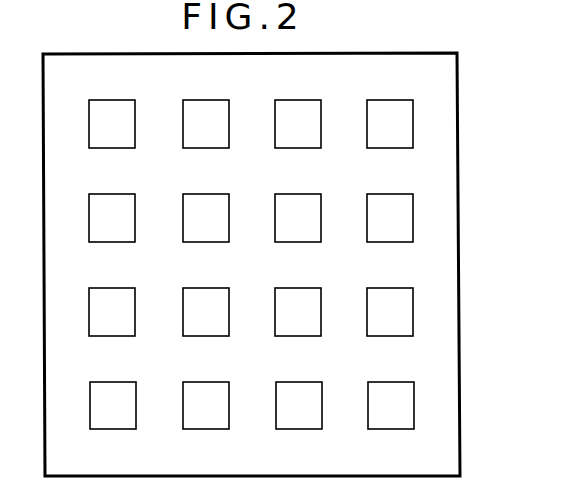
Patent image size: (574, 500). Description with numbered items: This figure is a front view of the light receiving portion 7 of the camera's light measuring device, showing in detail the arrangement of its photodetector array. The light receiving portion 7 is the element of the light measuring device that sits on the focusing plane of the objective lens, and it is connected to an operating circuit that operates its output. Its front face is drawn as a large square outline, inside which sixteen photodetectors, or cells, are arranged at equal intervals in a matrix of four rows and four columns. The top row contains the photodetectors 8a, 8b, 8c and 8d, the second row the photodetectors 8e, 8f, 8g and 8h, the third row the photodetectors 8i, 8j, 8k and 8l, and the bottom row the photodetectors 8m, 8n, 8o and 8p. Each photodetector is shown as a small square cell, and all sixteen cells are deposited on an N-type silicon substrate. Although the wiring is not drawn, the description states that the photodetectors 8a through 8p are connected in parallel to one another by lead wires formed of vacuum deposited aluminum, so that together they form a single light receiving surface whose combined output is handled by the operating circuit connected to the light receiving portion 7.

The light receiving portion 7 is at (464, 255).
The photodetector 8a is at (112, 124).
The photodetector 8b is at (206, 124).
The photodetector 8c is at (298, 124).
The photodetector 8d is at (390, 124).
The photodetector 8e is at (112, 218).
The photodetector 8f is at (206, 218).
The photodetector 8g is at (298, 218).
The photodetector 8h is at (390, 218).
The photodetector 8i is at (112, 312).
The photodetector 8j is at (206, 312).
The photodetector 8k is at (298, 312).
The photodetector 8l is at (390, 312).
The photodetector 8m is at (113, 405).
The photodetector 8n is at (206, 405).
The photodetector 8o is at (299, 405).
The photodetector 8p is at (391, 405).